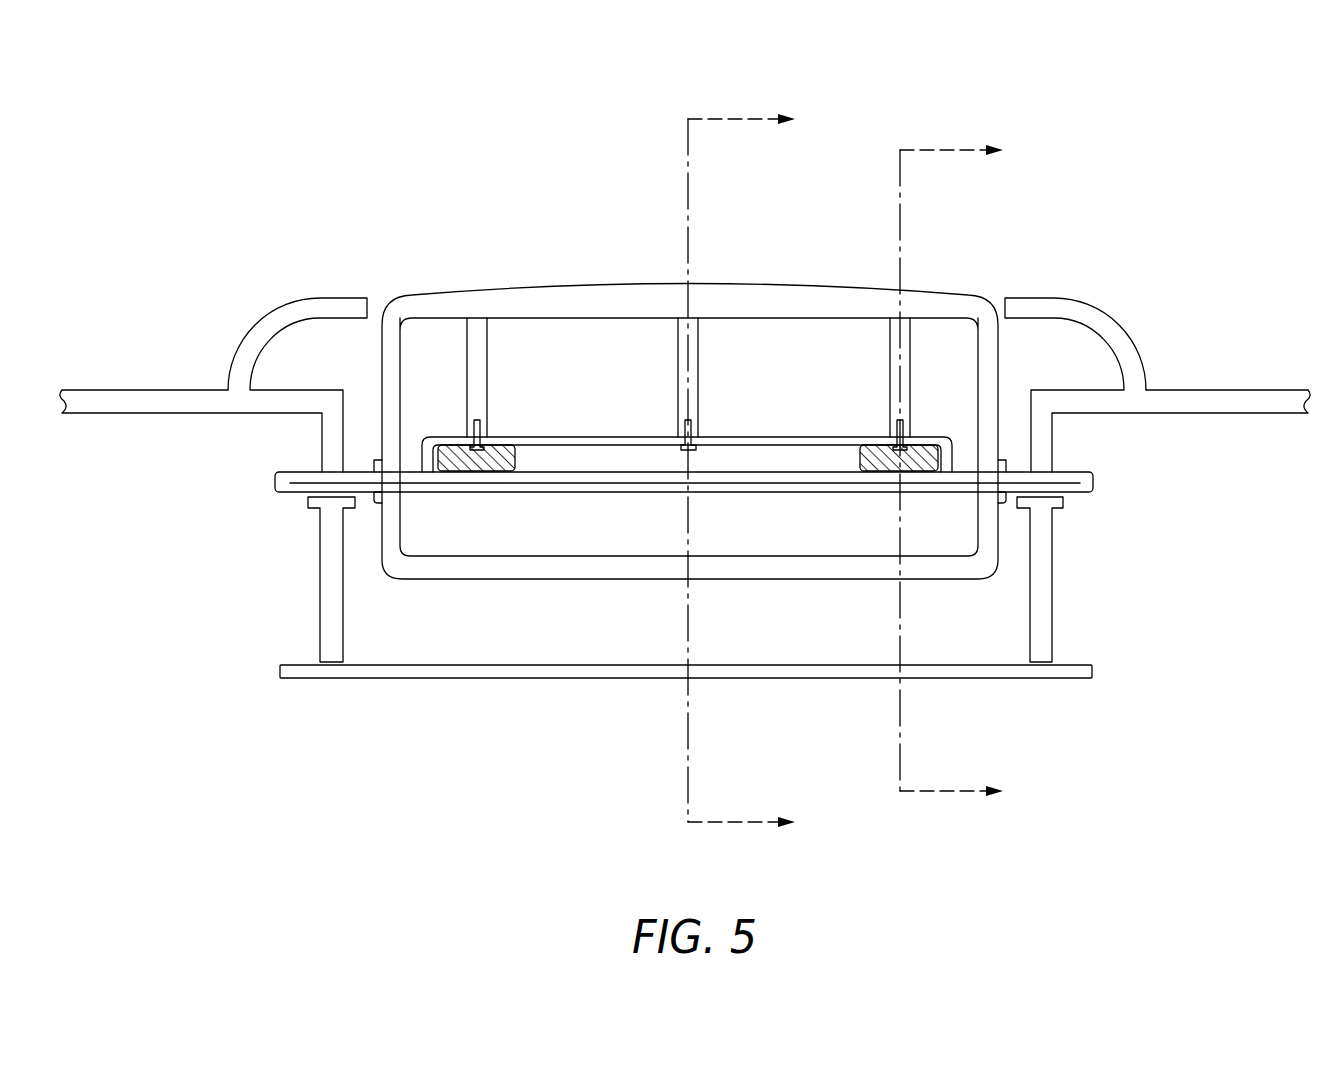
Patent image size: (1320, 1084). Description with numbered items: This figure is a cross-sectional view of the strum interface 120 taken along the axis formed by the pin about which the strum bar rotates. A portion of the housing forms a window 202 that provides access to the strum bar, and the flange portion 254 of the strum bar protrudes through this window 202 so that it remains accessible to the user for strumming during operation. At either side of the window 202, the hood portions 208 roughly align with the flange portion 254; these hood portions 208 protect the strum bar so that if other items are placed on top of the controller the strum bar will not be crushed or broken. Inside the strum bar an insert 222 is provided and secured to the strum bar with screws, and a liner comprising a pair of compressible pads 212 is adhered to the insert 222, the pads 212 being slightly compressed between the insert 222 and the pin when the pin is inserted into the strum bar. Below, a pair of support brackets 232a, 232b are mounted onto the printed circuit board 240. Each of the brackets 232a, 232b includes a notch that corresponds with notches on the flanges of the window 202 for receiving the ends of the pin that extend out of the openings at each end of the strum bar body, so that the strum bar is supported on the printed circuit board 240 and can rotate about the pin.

The strum interface 120 is at (1212, 162).
The window 202 is at (1228, 392).
The hood portions 208 is at (269, 313).
The compressible pads 212 is at (522, 450).
The insert 222 is at (606, 437).
The support bracket 232a is at (323, 613).
The support bracket 232b is at (1052, 603).
The printed circuit board 240 is at (303, 680).
The flange portion 254 is at (478, 300).